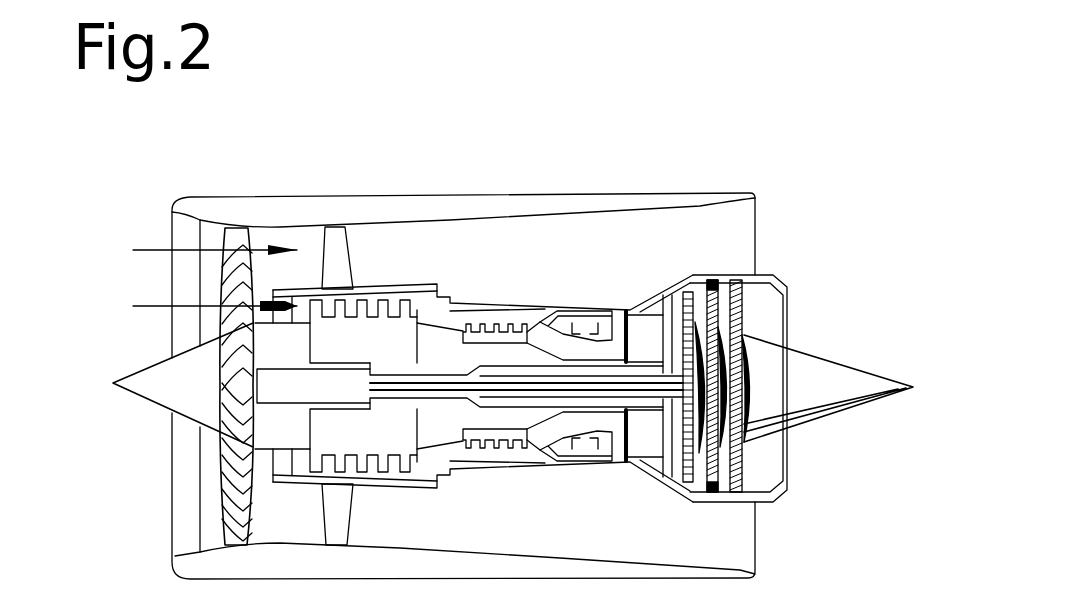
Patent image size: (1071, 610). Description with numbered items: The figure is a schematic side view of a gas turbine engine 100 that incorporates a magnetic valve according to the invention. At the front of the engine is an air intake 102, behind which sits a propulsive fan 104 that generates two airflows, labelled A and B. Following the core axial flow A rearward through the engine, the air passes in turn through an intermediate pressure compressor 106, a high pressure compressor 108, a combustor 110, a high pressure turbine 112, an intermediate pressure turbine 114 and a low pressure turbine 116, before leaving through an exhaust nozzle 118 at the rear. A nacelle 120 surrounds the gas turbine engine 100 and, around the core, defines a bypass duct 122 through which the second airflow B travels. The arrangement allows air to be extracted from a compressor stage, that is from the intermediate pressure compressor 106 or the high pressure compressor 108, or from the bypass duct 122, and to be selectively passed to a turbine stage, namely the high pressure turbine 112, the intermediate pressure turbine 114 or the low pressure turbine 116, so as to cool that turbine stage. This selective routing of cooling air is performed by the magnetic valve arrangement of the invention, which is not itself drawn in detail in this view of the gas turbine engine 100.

The gas turbine engine 100 is at (145, 171).
The air intake 102 is at (205, 236).
The propulsive fan 104 is at (229, 232).
The intermediate pressure compressor 106 is at (340, 330).
The high pressure compressor 108 is at (484, 340).
The combustor 110 is at (591, 323).
The high pressure turbine 112 is at (621, 312).
The intermediate pressure turbine 114 is at (657, 476).
The low pressure turbine 116 is at (737, 494).
The exhaust nozzle 118 is at (772, 303).
The nacelle 120 is at (334, 212).
The bypass duct 122 is at (486, 230).